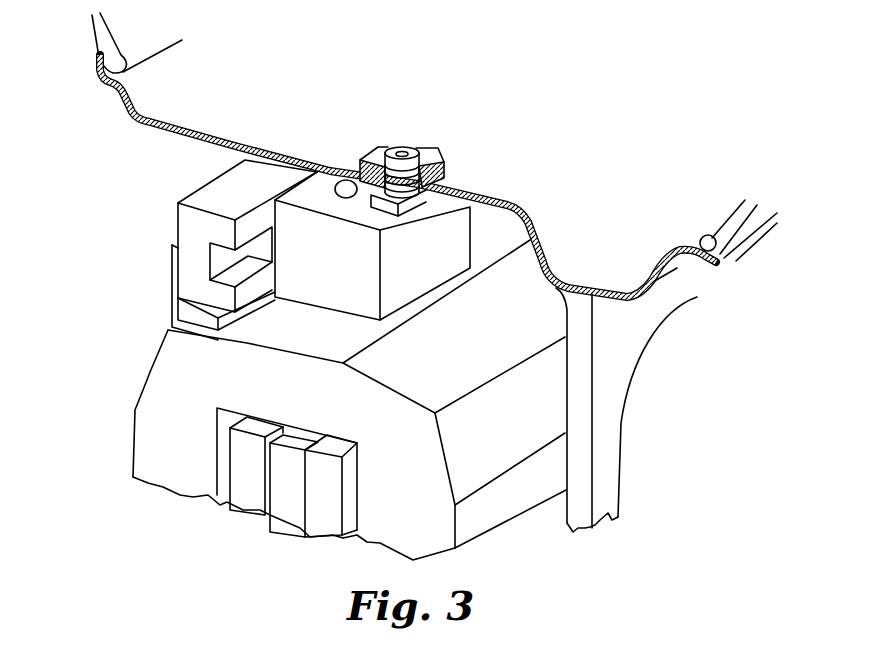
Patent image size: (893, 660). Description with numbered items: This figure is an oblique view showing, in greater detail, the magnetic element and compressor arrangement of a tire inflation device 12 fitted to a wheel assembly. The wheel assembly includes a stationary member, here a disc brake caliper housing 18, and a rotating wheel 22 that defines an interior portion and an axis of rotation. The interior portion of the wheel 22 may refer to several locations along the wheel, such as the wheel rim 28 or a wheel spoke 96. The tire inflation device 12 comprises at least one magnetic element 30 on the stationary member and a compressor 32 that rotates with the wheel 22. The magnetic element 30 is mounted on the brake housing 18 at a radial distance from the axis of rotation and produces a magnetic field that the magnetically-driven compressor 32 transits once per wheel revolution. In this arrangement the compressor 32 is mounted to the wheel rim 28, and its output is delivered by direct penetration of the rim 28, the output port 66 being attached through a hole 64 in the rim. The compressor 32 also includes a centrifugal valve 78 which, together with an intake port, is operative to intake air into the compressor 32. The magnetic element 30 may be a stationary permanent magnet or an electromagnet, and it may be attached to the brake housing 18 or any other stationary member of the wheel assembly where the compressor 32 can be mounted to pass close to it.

The tire inflation device 12 is at (294, 108).
The disc brake caliper housing 18 is at (150, 370).
The wheel 22 is at (578, 284).
The wheel rim 28 is at (212, 140).
The magnetic element 30 is at (187, 222).
The compressor 32 is at (508, 203).
The hole 64 is at (463, 237).
The output port 66 is at (402, 152).
The centrifugal valve 78 is at (346, 182).
The wheel spoke 96 is at (610, 418).